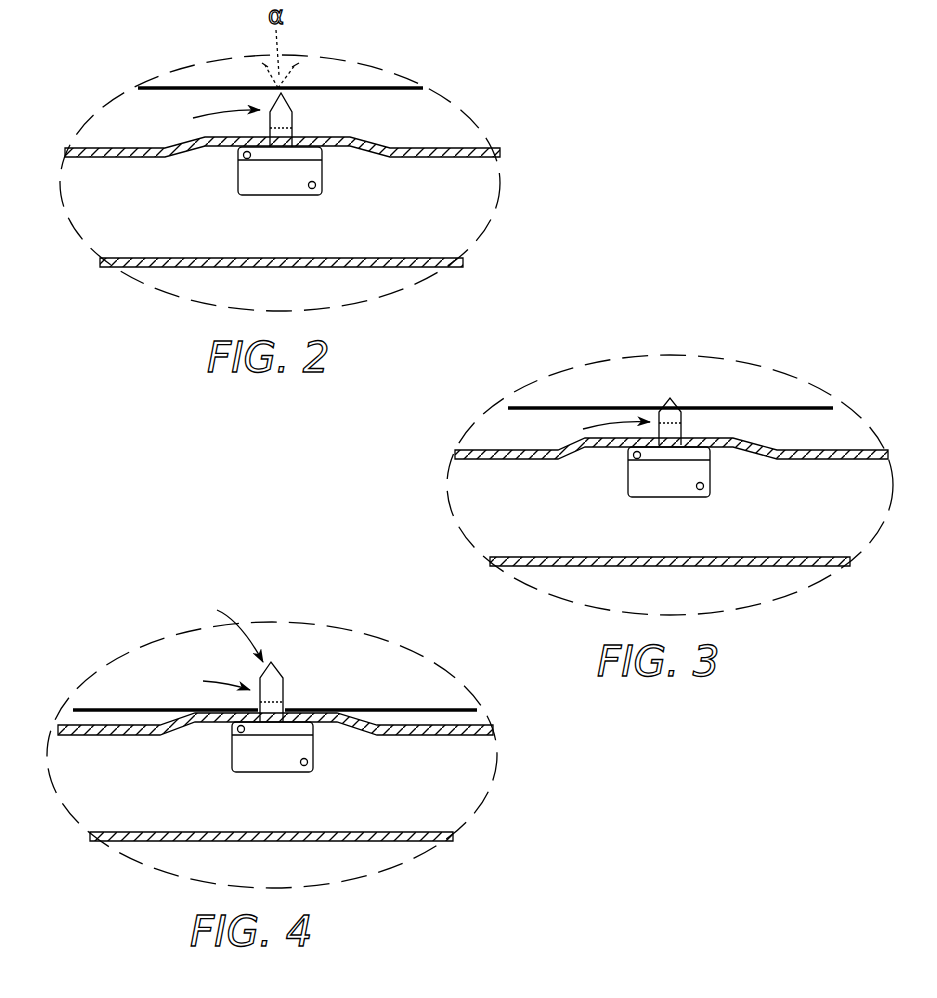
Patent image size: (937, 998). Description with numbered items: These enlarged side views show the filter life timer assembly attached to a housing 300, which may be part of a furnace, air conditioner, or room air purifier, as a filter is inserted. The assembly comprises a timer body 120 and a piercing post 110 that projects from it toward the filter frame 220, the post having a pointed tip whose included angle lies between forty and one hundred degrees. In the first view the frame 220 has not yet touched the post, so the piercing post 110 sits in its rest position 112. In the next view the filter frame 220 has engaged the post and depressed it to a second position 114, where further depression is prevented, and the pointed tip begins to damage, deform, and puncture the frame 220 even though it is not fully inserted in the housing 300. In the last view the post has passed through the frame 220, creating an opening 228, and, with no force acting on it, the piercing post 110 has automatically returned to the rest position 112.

In FIG. 2, the piercing post 110 is at (294, 112).
In FIG. 3, the piercing post 110 is at (683, 422).
In FIG. 4, the piercing post 110 is at (276, 678).
In FIG. 2, the rest position 112 is at (206, 119).
In FIG. 4, the rest position 112 is at (205, 680).
In FIG. 3, the second position 114 is at (596, 425).
In FIG. 2, the timer body 120 is at (252, 181).
In FIG. 3, the timer body 120 is at (642, 481).
In FIG. 4, the timer body 120 is at (257, 773).
In FIG. 2, the filter frame 220 is at (237, 87).
In FIG. 3, the filter frame 220 is at (627, 407).
In FIG. 4, the filter frame 220 is at (340, 708).
In FIG. 4, the opening 228 is at (216, 626).
In FIG. 2, the housing 300 is at (405, 158).
In FIG. 3, the housing 300 is at (797, 459).
In FIG. 4, the housing 300 is at (415, 735).